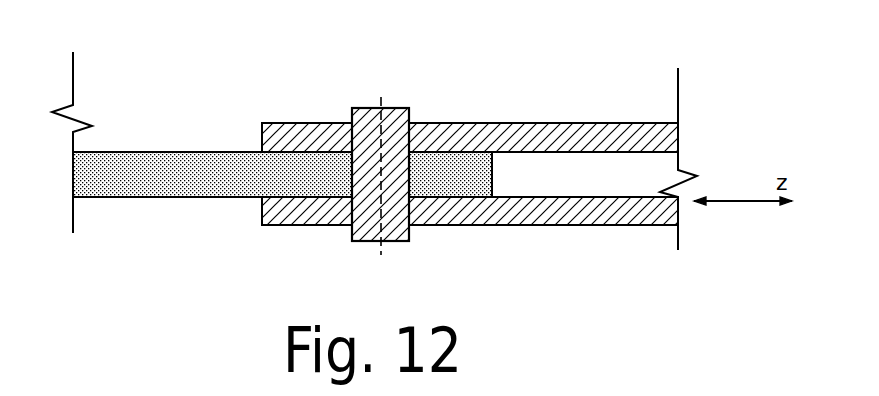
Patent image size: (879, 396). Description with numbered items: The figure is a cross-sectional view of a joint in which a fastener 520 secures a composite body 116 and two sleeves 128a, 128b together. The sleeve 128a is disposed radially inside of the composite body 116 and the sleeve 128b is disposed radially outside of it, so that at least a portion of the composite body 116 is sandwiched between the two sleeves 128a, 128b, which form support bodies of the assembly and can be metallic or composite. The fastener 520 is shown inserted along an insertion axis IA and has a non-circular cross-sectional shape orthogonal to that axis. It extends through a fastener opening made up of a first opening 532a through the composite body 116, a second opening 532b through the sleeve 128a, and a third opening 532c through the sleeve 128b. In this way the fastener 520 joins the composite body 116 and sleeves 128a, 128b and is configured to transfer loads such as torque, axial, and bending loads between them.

The composite body 116 is at (167, 167).
The sleeve 128a is at (625, 213).
The sleeve 128b is at (608, 138).
The fastener 520 is at (393, 123).
The first opening 532a is at (344, 143).
The second opening 532b is at (411, 212).
The third opening 532c is at (411, 142).
The insertion axis IA is at (380, 100).